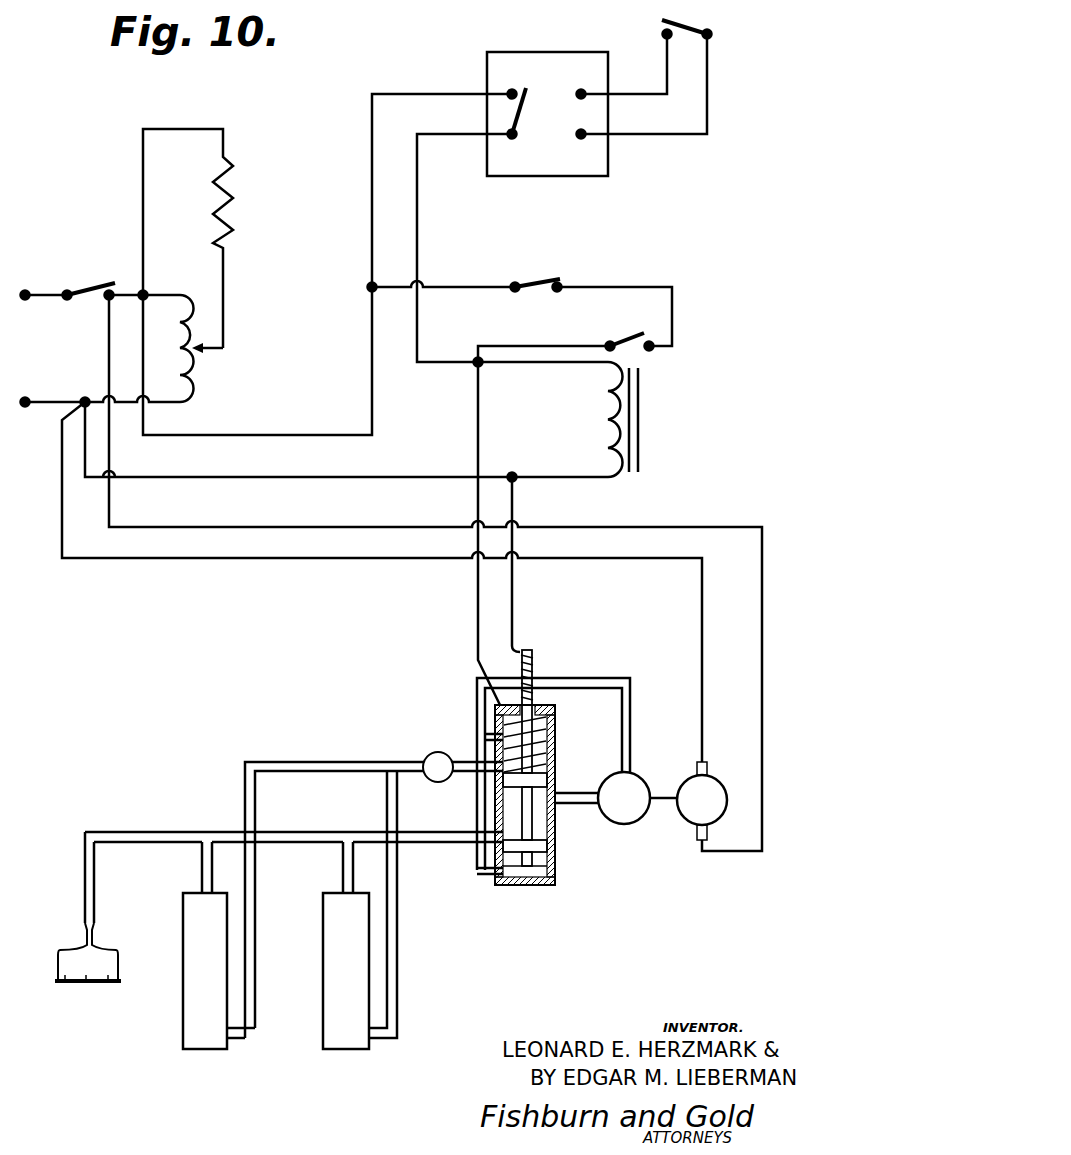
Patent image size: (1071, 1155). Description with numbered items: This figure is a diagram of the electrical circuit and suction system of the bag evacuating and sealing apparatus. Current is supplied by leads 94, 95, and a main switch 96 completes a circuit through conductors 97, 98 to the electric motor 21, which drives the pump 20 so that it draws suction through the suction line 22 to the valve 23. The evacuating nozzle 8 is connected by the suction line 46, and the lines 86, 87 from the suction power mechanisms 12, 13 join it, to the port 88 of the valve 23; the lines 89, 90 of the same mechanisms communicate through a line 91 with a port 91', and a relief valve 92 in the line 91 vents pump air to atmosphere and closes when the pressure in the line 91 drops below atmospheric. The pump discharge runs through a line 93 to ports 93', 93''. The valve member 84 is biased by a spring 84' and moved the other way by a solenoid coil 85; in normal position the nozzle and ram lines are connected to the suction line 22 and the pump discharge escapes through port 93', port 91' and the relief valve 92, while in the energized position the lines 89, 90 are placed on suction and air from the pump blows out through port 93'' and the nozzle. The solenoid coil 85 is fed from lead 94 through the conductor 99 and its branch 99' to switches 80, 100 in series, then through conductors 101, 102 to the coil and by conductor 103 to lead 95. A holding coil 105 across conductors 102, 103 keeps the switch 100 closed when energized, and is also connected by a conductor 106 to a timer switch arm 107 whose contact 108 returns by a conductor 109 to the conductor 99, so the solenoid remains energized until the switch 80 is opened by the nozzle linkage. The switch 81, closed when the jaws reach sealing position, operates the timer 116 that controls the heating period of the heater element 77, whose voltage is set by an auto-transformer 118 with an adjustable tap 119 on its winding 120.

The heater element 77 is at (234, 188).
The lead 94 is at (27, 291).
The main switch 96 is at (97, 286).
The lead 95 is at (40, 400).
The winding 120 is at (194, 395).
The auto-transformer 118 is at (197, 356).
The tap 119 is at (206, 347).
The conductor 99 is at (257, 361).
The conductor 98 is at (290, 526).
The conductor 97 is at (282, 560).
The conductor 109 is at (457, 93).
The contact 108 is at (512, 91).
The timer switch arm 107 is at (518, 116).
The timer 116 is at (558, 75).
The switch 81 is at (695, 30).
The conductor 106 is at (418, 210).
The branch 99' is at (443, 272).
The switch 80 is at (553, 282).
The switch 100 is at (640, 333).
The conductor 101 is at (540, 345).
The conductor 102 is at (476, 436).
The holding coil 105 is at (605, 428).
The conductor 103 is at (513, 510).
The solenoid coil 85 is at (534, 652).
The valve 23 is at (556, 876).
The spring 84' is at (553, 732).
The valve member 84 is at (548, 799).
The line 93 is at (553, 757).
The port 93' is at (469, 718).
The port 93'' is at (477, 886).
The pump 20 is at (636, 781).
The electric motor 21 is at (713, 782).
The suction line 22 is at (585, 800).
The relief valve 92 is at (425, 760).
The line 91 is at (334, 883).
The port 91' is at (468, 783).
The line 90 is at (250, 968).
The line 89 is at (392, 957).
The port 88 is at (484, 831).
The suction line 46 is at (85, 872).
The evacuating nozzle 8 is at (103, 962).
The line 87 is at (202, 851).
The line 86 is at (343, 873).
The suction power mechanism 13 is at (210, 1052).
The suction power mechanism 12 is at (345, 1052).